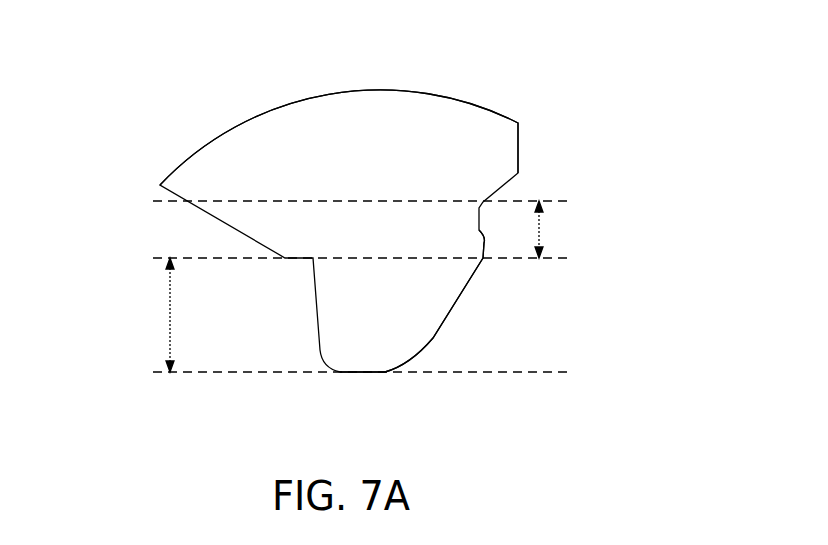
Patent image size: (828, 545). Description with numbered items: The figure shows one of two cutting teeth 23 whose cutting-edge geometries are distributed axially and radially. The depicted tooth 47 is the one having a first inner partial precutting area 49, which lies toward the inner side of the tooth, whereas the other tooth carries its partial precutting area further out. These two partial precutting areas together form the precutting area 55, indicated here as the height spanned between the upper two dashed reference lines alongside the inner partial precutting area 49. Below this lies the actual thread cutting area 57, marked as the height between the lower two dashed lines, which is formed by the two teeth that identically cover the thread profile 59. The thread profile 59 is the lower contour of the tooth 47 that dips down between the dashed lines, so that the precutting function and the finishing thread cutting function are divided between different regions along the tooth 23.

The tooth 23 is at (310, 92).
The tooth 47 is at (470, 140).
The first inner partial precutting area 49 is at (483, 258).
The precutting area 55 is at (542, 229).
The thread cutting area 57 is at (167, 315).
The thread profile 59 is at (433, 340).